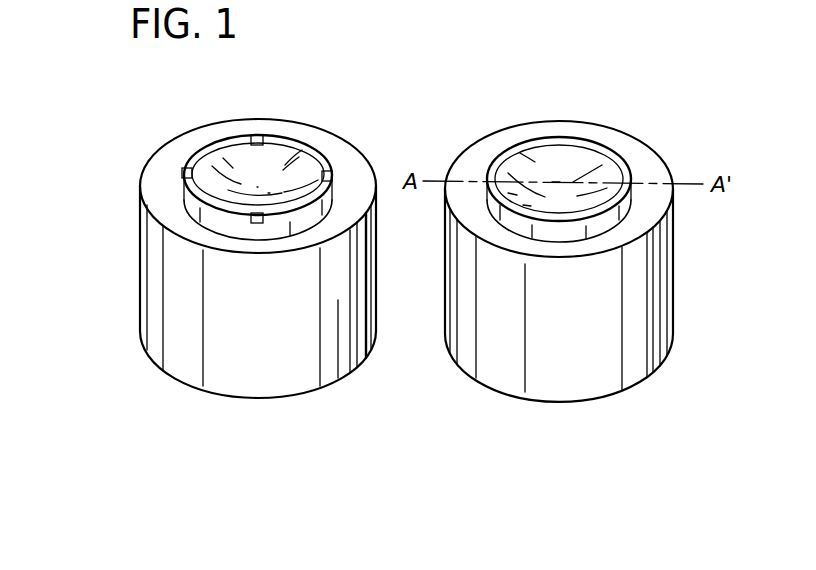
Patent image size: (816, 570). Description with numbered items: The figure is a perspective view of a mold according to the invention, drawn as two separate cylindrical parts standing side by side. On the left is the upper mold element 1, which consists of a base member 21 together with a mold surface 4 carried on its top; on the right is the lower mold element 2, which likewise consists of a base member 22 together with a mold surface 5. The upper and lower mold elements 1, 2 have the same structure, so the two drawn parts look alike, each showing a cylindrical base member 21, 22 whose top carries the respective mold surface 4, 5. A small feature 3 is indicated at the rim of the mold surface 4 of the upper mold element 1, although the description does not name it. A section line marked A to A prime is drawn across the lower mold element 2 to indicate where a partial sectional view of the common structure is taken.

The upper mold element 1 is at (242, 439).
The lower mold element 2 is at (573, 440).
The notch 3 is at (257, 134).
The mold surface 4 is at (278, 167).
The mold surface 5 is at (566, 165).
The base member 21 is at (142, 265).
The base member 22 is at (673, 272).